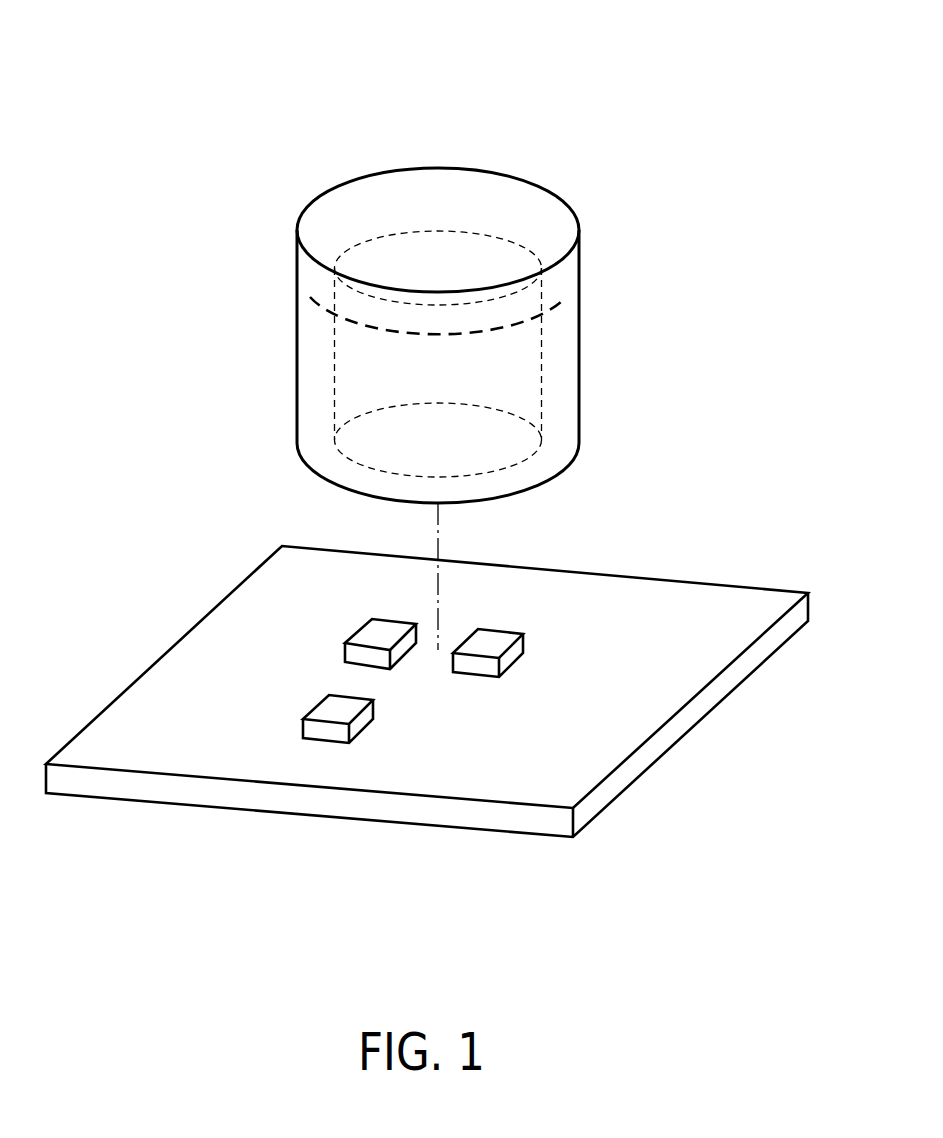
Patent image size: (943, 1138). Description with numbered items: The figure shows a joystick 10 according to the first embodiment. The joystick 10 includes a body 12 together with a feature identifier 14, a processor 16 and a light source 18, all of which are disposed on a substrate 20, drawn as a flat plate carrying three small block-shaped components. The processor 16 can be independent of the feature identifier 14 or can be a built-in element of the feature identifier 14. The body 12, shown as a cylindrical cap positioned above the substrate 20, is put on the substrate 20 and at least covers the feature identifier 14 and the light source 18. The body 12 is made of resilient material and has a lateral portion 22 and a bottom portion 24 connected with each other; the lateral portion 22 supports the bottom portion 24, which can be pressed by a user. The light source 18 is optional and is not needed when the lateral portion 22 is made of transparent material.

The joystick 10 is at (718, 80).
The body 12 is at (447, 409).
The feature identifier 14 is at (503, 643).
The processor 16 is at (330, 728).
The light source 18 is at (375, 635).
The substrate 20 is at (687, 720).
The lateral portion 22 is at (288, 283).
The bottom portion 24 is at (288, 204).